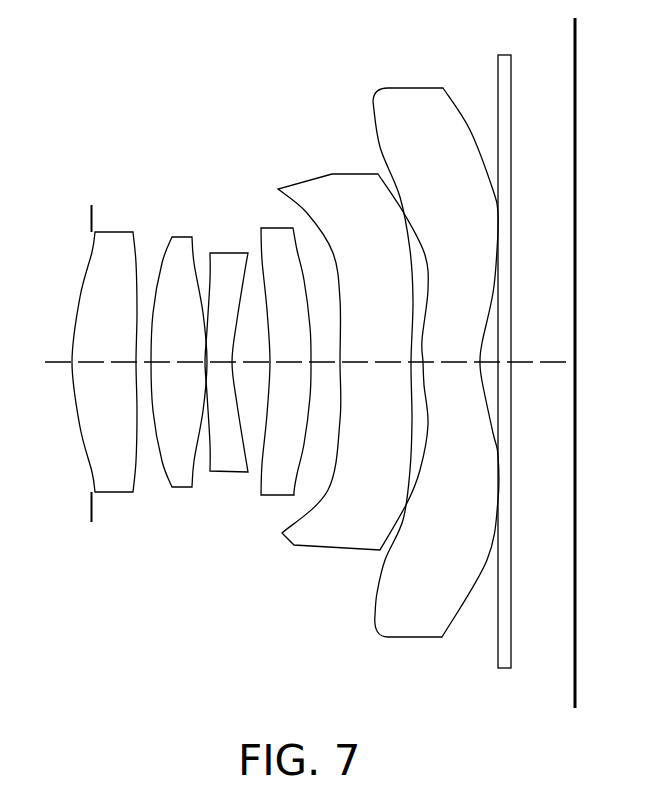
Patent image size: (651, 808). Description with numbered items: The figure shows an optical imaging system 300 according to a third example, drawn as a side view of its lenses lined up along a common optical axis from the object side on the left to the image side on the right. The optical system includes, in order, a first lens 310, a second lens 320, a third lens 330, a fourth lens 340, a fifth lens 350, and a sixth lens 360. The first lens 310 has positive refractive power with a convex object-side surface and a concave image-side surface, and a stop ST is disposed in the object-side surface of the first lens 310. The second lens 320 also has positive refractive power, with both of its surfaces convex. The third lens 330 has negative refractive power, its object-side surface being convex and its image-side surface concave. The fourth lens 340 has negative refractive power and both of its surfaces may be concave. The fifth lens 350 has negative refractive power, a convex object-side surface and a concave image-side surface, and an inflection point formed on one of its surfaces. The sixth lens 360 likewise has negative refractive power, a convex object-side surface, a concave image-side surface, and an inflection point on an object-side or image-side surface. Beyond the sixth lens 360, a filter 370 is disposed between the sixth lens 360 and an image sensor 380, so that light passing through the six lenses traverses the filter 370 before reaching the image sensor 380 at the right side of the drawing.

The optical imaging system 300 is at (209, 106).
The stop ST is at (91, 208).
The first lens 310 is at (97, 494).
The second lens 320 is at (178, 488).
The third lens 330 is at (224, 473).
The fourth lens 340 is at (265, 496).
The fifth lens 350 is at (322, 551).
The sixth lens 360 is at (403, 638).
The filter 370 is at (496, 657).
The image sensor 380 is at (573, 683).